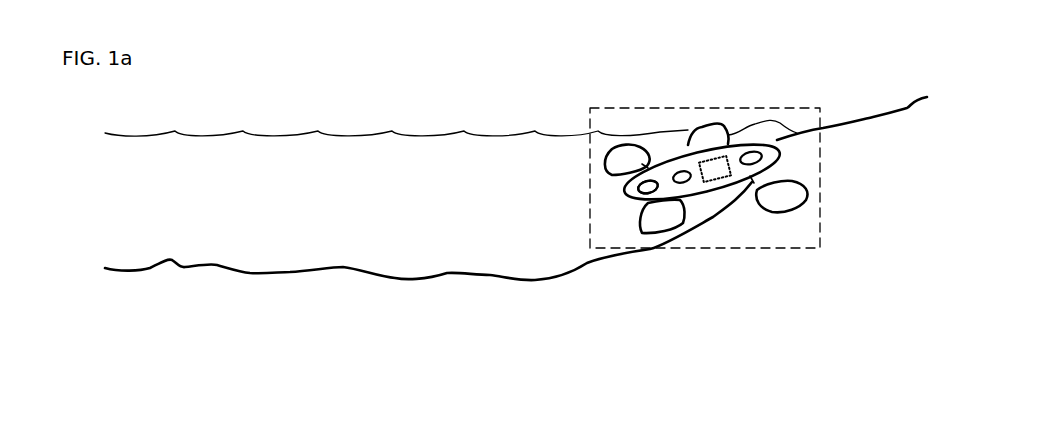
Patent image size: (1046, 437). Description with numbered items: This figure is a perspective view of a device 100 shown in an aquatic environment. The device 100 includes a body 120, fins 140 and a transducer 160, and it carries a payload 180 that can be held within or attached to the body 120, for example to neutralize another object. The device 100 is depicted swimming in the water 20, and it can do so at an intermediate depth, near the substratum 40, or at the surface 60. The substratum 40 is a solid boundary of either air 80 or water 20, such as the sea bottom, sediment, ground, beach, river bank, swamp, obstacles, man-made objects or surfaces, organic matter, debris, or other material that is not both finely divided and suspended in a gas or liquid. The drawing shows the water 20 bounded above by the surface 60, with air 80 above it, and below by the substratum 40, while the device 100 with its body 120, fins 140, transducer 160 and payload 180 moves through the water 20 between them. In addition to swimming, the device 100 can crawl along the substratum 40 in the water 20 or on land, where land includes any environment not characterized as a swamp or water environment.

The water 20 is at (402, 237).
The substratum 40 is at (249, 268).
The surface 60 is at (361, 134).
The air 80 is at (178, 108).
The device 100 is at (625, 101).
The body 120 is at (790, 162).
The fins 140 is at (808, 202).
The transducer 160 is at (630, 191).
The payload 180 is at (714, 180).